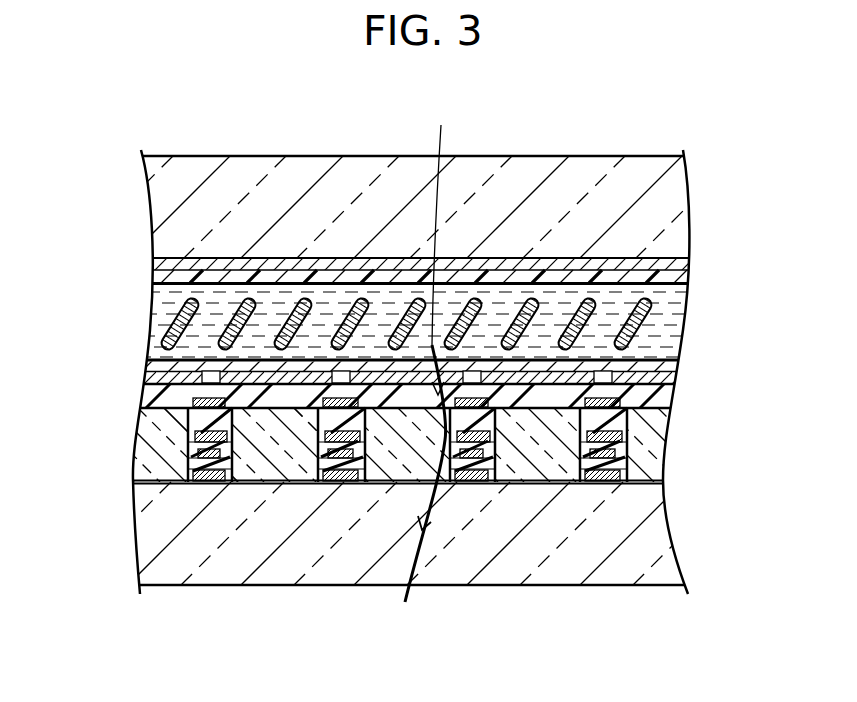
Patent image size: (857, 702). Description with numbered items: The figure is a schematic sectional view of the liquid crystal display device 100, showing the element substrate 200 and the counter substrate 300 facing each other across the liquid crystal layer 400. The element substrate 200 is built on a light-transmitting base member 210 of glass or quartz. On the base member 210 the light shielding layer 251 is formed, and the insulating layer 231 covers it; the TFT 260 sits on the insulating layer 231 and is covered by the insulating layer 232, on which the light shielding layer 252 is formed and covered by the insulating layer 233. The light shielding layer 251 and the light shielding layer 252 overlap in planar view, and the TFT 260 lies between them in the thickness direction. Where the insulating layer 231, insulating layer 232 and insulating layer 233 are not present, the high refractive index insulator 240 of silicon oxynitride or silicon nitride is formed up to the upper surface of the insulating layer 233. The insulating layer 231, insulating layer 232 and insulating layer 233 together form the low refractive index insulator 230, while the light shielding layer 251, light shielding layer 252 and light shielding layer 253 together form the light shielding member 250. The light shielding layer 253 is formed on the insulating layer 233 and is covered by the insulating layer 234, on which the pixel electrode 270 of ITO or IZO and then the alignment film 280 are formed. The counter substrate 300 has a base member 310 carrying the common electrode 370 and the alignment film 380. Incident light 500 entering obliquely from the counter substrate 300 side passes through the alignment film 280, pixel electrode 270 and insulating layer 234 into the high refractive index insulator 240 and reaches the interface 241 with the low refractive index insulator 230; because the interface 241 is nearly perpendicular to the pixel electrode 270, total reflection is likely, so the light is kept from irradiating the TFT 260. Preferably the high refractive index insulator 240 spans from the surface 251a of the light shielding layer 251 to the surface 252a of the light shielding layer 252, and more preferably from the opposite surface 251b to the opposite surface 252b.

The liquid crystal display device 100 is at (531, 140).
The element substrate 200 is at (118, 514).
The base member 210 is at (663, 545).
The low refractive index insulator 230 is at (752, 435).
The insulating layer 231 is at (627, 480).
The insulating layer 232 is at (628, 449).
The insulating layer 233 is at (630, 430).
The insulating layer 234 is at (668, 393).
The high refractive index insulator 240 is at (383, 483).
The interface 241 is at (437, 468).
The light shielding member 250 is at (632, 643).
The light shielding layer 251 is at (472, 482).
The surface 251a is at (200, 469).
The surface 251b is at (203, 483).
The light shielding layer 252 is at (497, 438).
The surface 252a is at (190, 449).
The surface 252b is at (203, 398).
The light shielding layer 253 is at (490, 402).
The TFT 260 is at (457, 474).
The pixel electrode 270 is at (670, 377).
The alignment film 280 is at (672, 366).
The counter substrate 300 is at (118, 222).
The base member 310 is at (690, 207).
The common electrode 370 is at (688, 263).
The alignment film 380 is at (688, 276).
The liquid crystal layer 400 is at (147, 335).
The incident light 500 is at (437, 348).